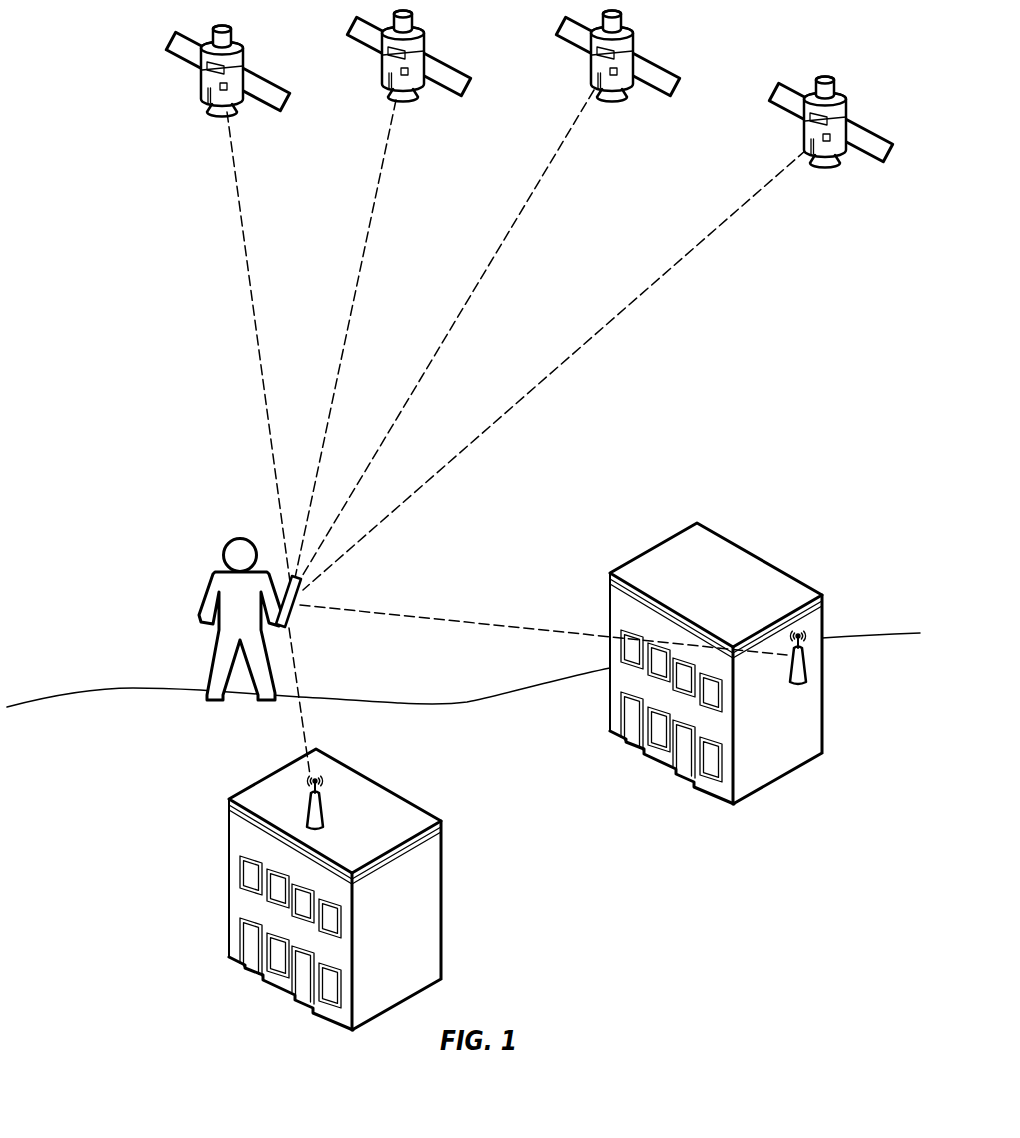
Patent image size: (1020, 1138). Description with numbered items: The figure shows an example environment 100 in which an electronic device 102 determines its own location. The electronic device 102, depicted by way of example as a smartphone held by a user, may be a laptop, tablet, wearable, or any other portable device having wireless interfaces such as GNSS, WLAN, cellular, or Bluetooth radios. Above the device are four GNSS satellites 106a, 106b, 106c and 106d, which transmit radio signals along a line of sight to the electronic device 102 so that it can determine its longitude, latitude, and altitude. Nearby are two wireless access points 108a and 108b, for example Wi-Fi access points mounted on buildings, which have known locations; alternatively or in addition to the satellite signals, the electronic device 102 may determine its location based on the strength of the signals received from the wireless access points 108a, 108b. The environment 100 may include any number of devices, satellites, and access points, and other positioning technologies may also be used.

The environment 100 is at (83, 131).
The electronic device 102 is at (300, 603).
The GNSS satellite 106a is at (243, 42).
The GNSS satellite 106b is at (426, 26).
The GNSS satellite 106c is at (634, 26).
The GNSS satellite 106d is at (846, 94).
The wireless access point 108a is at (807, 668).
The wireless access point 108b is at (325, 812).